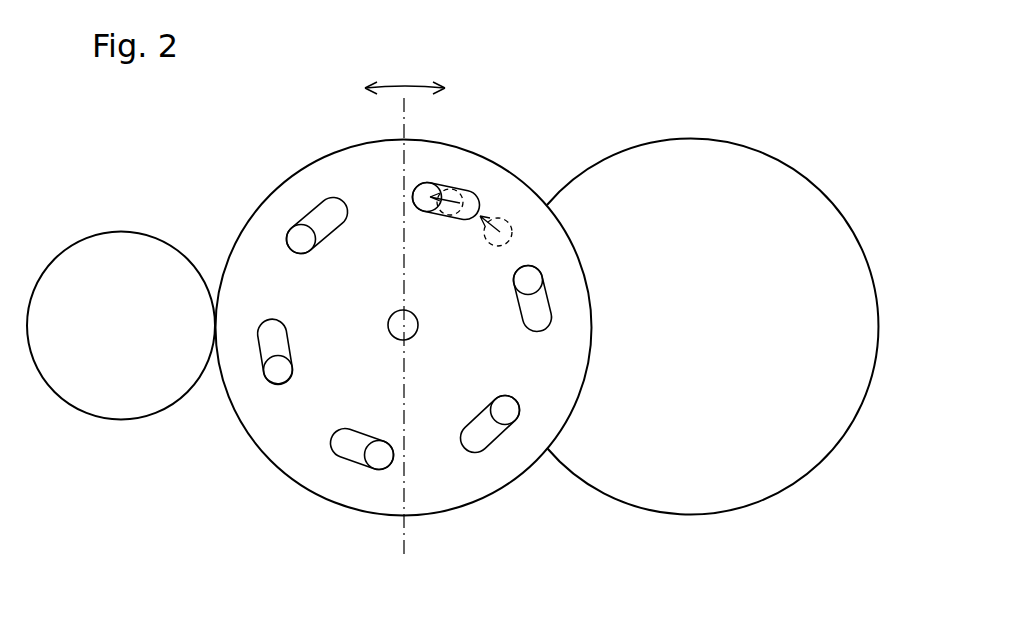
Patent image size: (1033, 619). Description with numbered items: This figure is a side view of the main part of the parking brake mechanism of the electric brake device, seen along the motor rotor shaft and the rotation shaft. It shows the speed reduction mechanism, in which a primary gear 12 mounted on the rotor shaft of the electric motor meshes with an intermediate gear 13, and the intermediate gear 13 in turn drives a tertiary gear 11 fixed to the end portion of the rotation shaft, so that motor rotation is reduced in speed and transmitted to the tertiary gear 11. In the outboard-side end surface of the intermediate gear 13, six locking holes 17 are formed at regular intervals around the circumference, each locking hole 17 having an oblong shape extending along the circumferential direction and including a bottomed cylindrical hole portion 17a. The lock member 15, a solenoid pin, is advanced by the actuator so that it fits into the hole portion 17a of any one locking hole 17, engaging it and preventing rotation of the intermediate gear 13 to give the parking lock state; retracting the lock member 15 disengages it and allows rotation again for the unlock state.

The tertiary gear 11 is at (758, 187).
The primary gear 12 is at (110, 405).
The intermediate gear 13 is at (467, 485).
The lock member 15 is at (457, 200).
The locking hole 17 is at (327, 217).
The bottomed cylindrical hole portion 17a is at (301, 239).